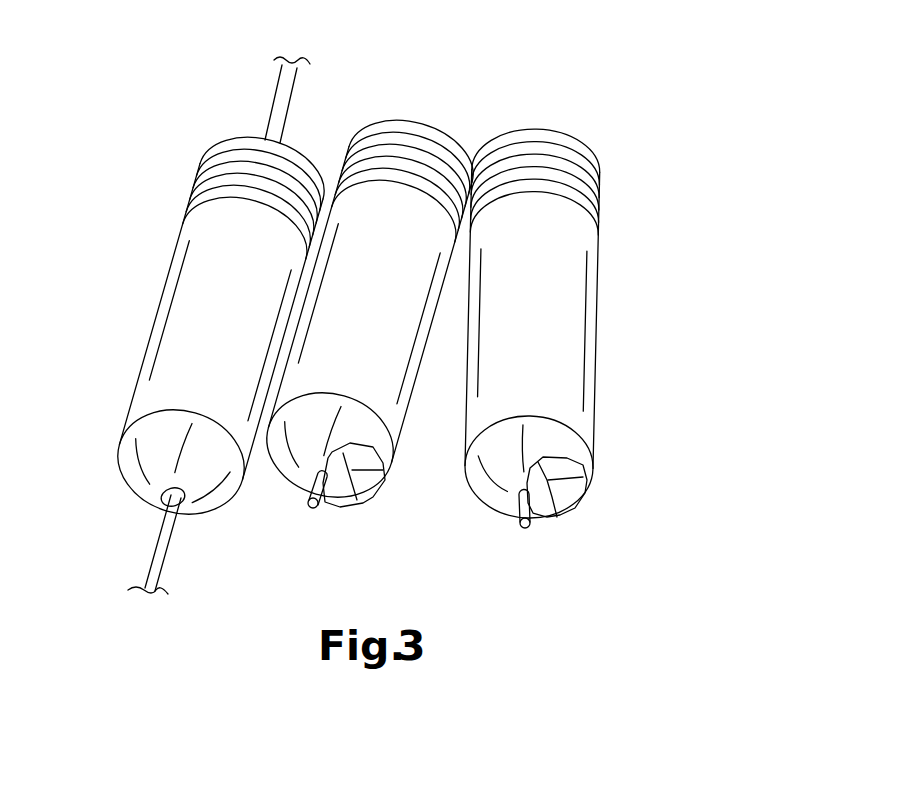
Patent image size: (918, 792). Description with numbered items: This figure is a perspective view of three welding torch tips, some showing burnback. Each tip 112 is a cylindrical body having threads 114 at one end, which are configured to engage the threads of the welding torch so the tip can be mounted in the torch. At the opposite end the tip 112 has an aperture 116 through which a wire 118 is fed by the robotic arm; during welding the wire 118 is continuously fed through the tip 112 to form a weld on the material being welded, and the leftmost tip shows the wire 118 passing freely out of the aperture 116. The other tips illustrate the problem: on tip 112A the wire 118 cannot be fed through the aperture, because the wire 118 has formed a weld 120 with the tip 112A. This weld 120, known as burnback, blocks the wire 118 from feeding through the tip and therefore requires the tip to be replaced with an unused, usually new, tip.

The tip 112 is at (152, 266).
The tip 112A is at (615, 305).
The threads 114 is at (240, 153).
The aperture 116 is at (162, 500).
The wire 118 is at (160, 547).
The weld 120 is at (545, 523).